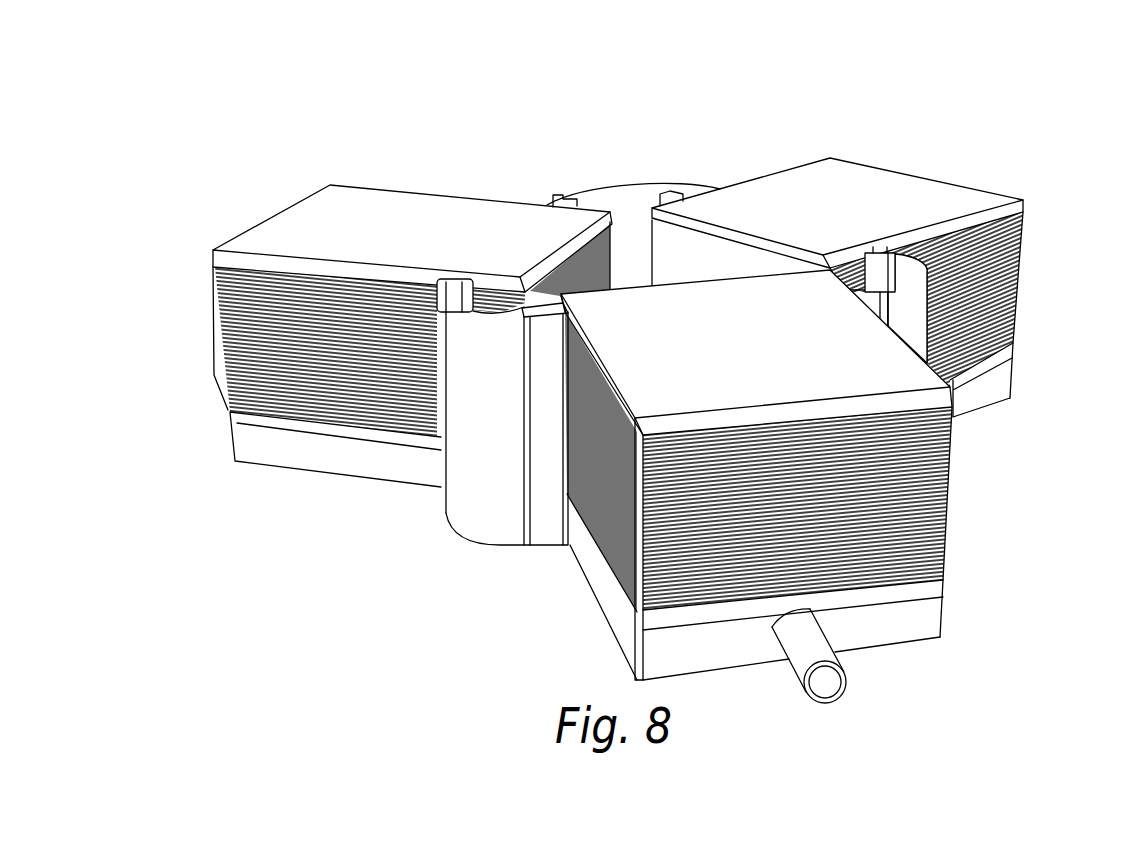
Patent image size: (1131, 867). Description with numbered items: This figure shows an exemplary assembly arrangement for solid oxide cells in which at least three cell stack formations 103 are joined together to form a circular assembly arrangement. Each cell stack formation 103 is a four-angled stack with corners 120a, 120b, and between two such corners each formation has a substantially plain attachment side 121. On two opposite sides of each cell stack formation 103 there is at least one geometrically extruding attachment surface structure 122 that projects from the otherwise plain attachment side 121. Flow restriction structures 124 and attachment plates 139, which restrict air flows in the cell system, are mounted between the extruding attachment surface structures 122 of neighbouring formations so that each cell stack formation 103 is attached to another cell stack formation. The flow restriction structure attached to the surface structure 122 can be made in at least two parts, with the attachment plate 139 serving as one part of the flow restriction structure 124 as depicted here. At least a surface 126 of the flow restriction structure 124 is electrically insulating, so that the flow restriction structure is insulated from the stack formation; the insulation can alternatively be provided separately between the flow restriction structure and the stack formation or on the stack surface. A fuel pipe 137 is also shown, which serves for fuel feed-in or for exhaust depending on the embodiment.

The cell stack formation 103 is at (780, 491).
The corner 120a is at (950, 390).
The corner 120b is at (823, 277).
The substantially plain attachment side 121 is at (601, 522).
The geometrically extruding attachment surface structure 122 is at (570, 311).
The flow restriction structure 124 is at (888, 247).
The electrically insulating surface 126 is at (887, 247).
The fuel pipe 137 is at (830, 682).
The attachment plate 139 is at (630, 212).